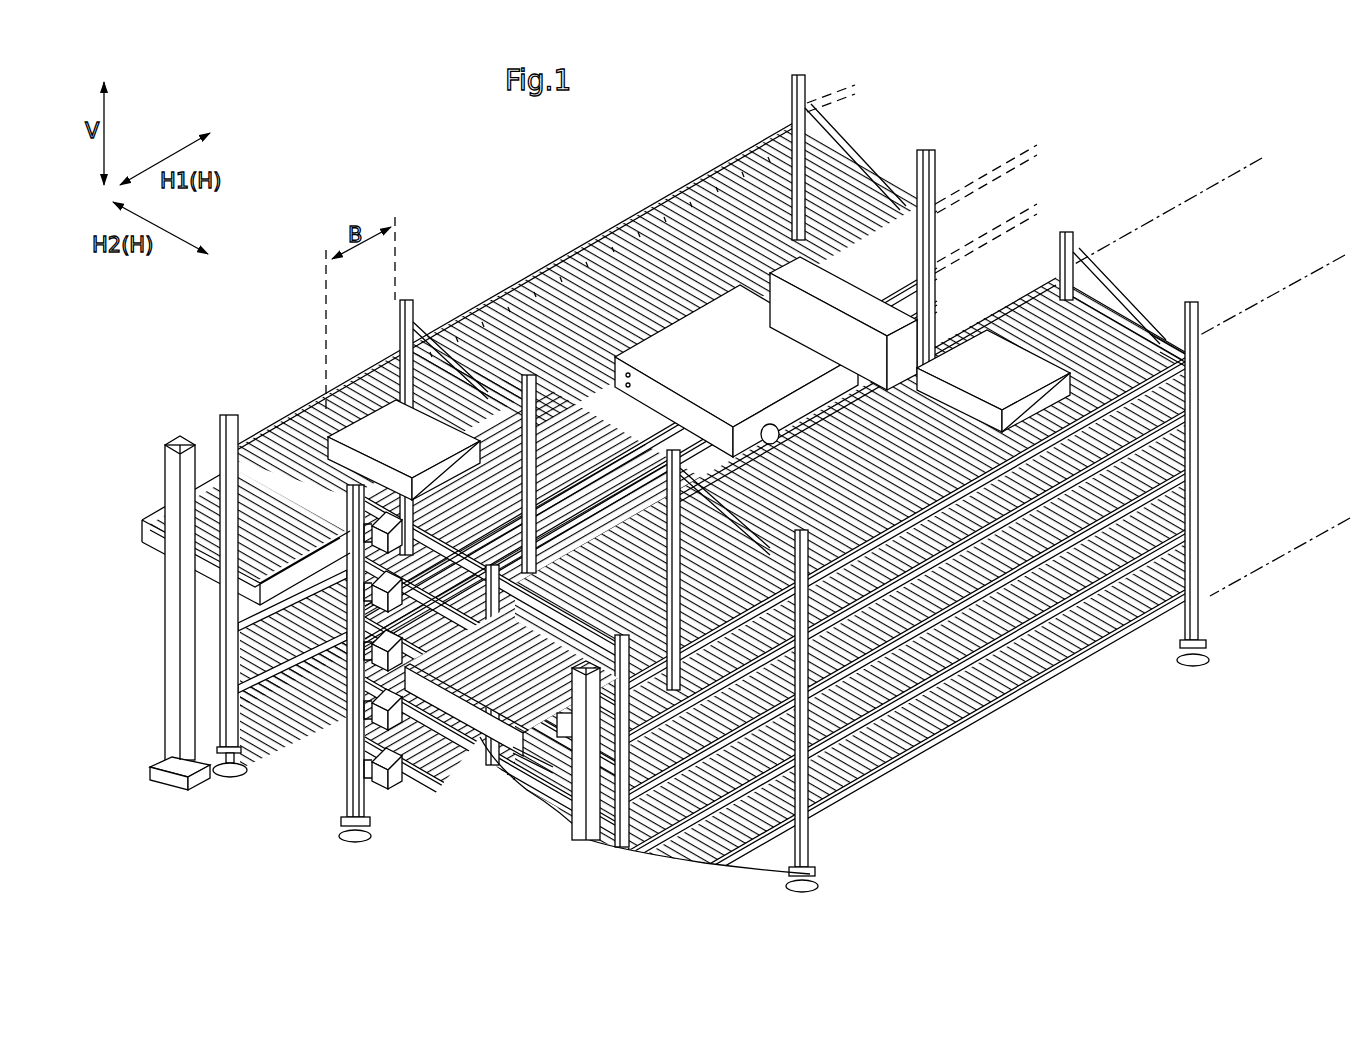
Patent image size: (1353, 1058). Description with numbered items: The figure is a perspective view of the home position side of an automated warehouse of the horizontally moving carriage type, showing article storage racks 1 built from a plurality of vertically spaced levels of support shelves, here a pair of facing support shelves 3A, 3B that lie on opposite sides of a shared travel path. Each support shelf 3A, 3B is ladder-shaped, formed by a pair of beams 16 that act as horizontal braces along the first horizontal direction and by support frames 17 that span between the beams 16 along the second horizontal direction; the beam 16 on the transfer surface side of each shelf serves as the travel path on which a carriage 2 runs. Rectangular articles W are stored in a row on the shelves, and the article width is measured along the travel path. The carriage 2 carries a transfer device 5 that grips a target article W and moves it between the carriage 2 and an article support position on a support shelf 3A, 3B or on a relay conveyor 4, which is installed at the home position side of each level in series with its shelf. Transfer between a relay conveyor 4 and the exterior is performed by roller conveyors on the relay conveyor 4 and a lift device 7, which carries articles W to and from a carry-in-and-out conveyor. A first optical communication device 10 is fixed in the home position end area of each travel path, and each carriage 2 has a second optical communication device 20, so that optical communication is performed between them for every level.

The article storage rack 1 is at (530, 222).
The carriage 2 is at (905, 302).
The support shelf 3A is at (641, 212).
The support shelf 3B is at (1220, 427).
The relay conveyor 4 is at (302, 397).
The transfer device 5 is at (800, 297).
The lift device 7 is at (147, 500).
The first optical communication device 10 is at (303, 765).
The beam 16 is at (897, 207).
The support frame 17 is at (762, 195).
The second optical communication device 20 is at (583, 345).
The article W is at (330, 440).